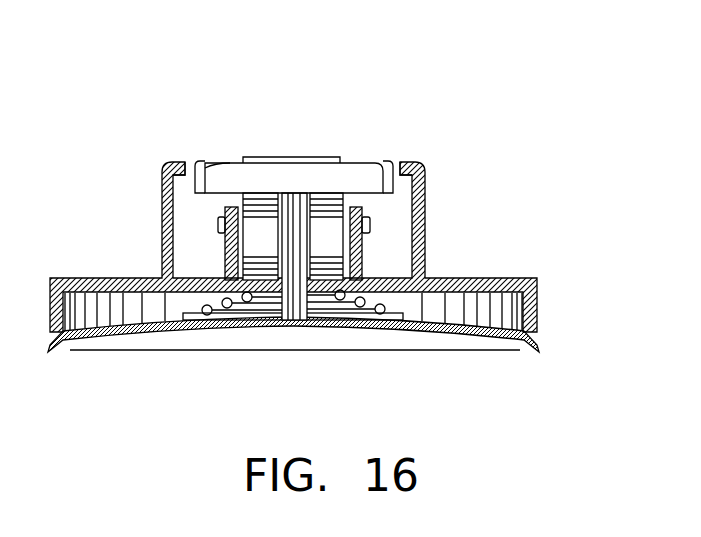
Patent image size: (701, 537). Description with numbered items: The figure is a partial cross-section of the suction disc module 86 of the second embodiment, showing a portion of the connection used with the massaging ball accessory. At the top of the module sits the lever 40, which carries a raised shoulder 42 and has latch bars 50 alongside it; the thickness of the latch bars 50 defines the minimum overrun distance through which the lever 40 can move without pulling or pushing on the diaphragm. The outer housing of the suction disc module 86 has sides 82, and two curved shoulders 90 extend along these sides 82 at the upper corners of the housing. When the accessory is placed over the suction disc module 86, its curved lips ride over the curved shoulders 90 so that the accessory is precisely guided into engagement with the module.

The suction disc module 86 is at (512, 122).
The sides 82 is at (160, 226).
The curved shoulders 90 is at (172, 162).
The lever 40 is at (350, 180).
The raised shoulder 42 is at (327, 160).
The latch bars 50 is at (200, 163).